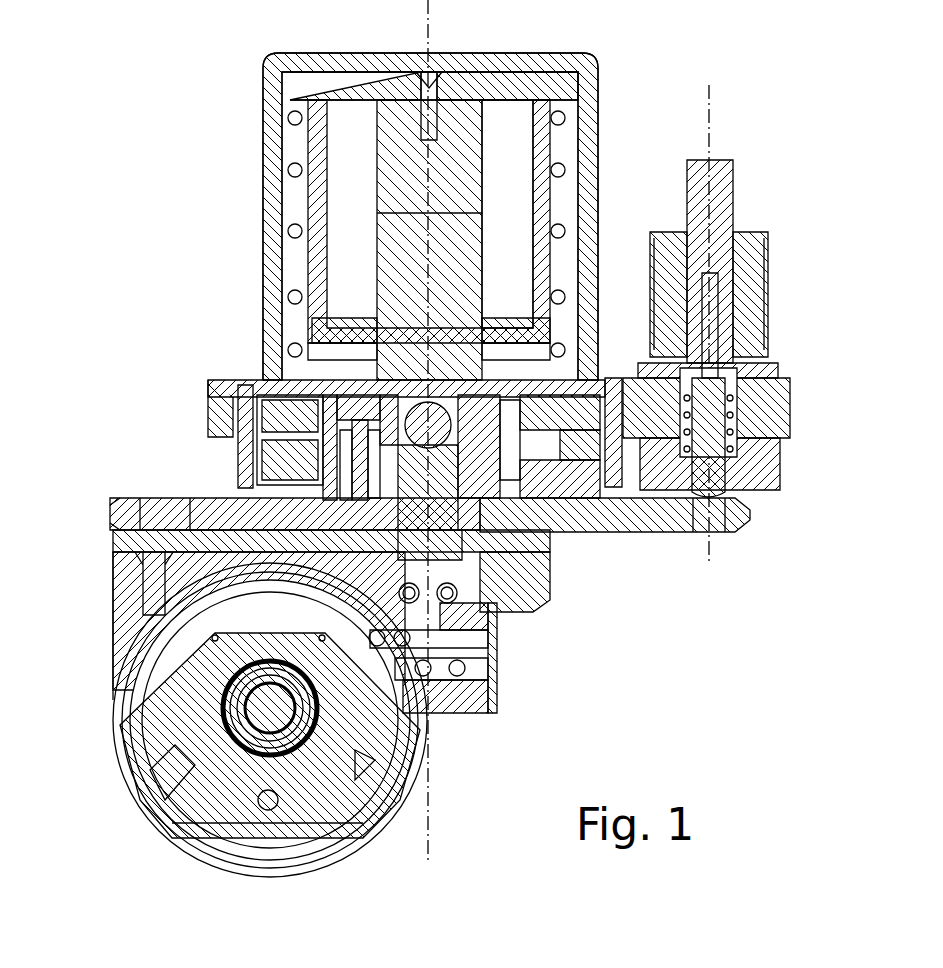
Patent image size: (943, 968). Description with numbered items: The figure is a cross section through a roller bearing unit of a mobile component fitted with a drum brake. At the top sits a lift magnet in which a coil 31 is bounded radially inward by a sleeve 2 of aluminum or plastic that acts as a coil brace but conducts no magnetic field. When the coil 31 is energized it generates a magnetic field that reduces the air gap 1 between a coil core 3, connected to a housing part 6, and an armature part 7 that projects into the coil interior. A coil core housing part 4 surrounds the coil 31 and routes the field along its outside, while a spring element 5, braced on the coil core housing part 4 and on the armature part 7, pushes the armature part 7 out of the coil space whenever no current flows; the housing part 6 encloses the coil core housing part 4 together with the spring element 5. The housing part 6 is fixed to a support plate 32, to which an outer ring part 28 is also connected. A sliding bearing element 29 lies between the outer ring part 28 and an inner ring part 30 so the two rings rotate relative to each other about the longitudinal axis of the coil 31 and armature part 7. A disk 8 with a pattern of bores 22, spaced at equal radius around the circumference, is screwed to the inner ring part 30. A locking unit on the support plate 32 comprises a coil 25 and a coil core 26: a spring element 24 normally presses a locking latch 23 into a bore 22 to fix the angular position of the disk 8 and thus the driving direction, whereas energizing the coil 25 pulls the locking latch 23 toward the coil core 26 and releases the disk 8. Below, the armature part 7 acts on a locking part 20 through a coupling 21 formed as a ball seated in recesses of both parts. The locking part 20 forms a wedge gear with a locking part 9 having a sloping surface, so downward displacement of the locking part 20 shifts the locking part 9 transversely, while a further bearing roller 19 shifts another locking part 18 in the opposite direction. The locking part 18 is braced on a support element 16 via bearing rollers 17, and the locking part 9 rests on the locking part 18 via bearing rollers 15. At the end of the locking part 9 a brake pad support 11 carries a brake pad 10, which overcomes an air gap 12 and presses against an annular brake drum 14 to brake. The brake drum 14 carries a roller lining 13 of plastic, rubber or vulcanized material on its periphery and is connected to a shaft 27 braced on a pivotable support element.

The air gap 1 is at (465, 200).
The sleeve 2 is at (375, 118).
The coil core 3 is at (390, 158).
The coil core housing part 4 is at (400, 213).
The spring element 5 is at (288, 233).
The housing part 6 is at (270, 283).
The armature part 7 is at (410, 322).
The disk 8 is at (190, 498).
The locking part 9 is at (180, 596).
The brake pad 10 is at (225, 645).
The brake pad support 11 is at (180, 683).
The air gap 12 is at (130, 700).
The roller lining 13 is at (140, 760).
The brake drum 14 is at (215, 845).
The bearing rollers 15 is at (420, 690).
The support element 16 is at (455, 700).
The bearing rollers 17 is at (490, 680).
The locking part 18 is at (470, 645).
The bearing roller 19 is at (450, 600).
The locking part 20 is at (390, 485).
The coupling 21 is at (320, 392).
The bores 22 is at (715, 525).
The locking latch 23 is at (715, 465).
The spring element 24 is at (735, 412).
The coil 25 is at (760, 285).
The coil core 26 is at (720, 195).
The shaft 27 is at (270, 712).
The outer ring part 28 is at (565, 490).
The sliding bearing element 29 is at (575, 440).
The inner ring part 30 is at (445, 432).
The coil 31 is at (515, 115).
The support plate 32 is at (778, 397).